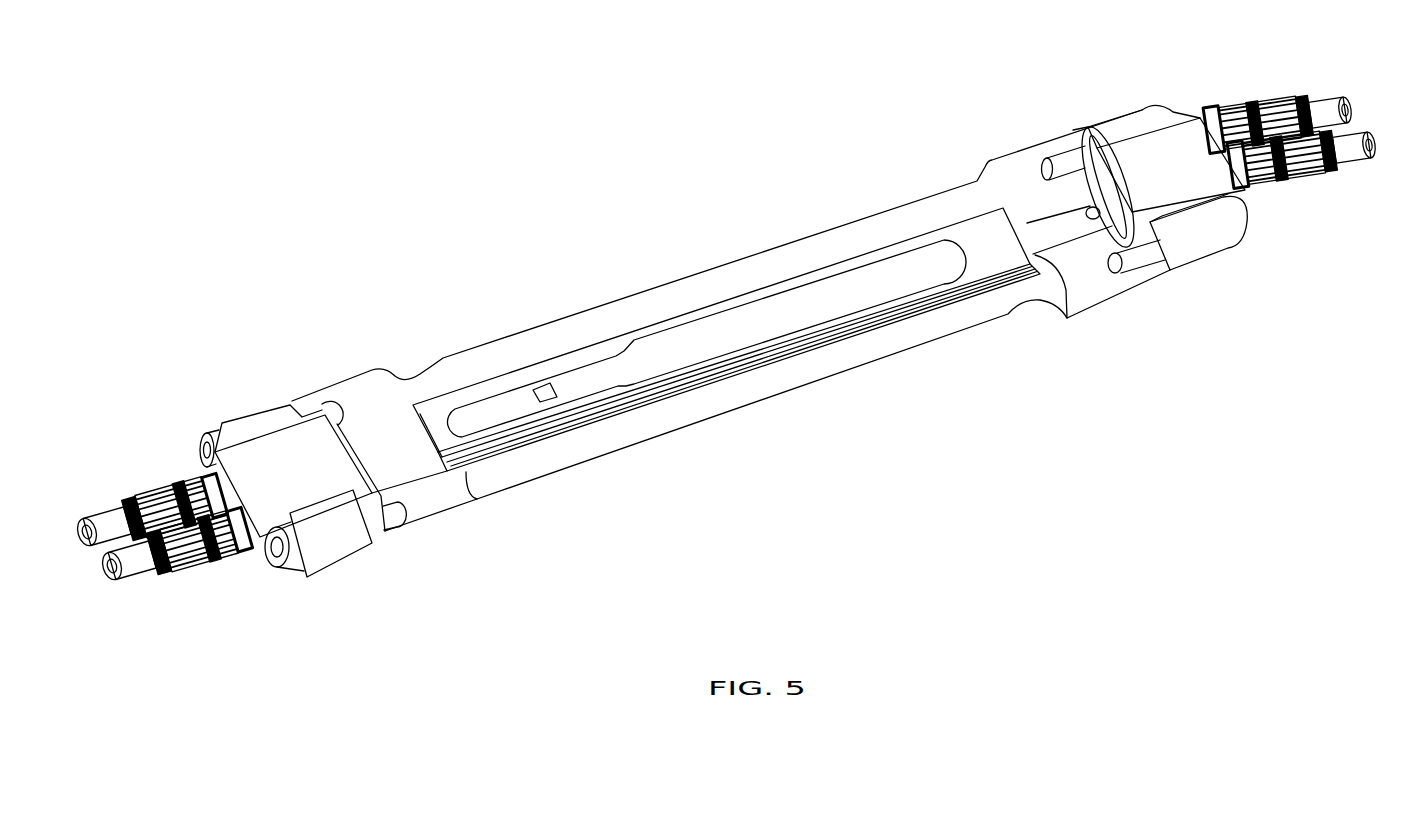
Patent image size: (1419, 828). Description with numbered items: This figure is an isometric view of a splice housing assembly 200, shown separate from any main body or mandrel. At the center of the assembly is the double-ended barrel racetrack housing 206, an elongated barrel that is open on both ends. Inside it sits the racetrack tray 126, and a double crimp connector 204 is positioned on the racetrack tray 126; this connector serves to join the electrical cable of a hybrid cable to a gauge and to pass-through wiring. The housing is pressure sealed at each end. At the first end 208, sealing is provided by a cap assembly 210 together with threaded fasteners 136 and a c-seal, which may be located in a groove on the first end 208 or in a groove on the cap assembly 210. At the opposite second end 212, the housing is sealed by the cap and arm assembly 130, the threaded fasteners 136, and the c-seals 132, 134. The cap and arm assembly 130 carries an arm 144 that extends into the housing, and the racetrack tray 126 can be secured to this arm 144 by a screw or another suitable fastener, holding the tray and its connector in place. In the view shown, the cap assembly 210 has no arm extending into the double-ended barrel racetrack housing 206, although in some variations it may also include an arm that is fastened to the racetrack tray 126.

The splice housing assembly 200 is at (725, 322).
The racetrack tray 126 is at (622, 347).
The cap and arm assembly 130 is at (1100, 137).
The c-seal 132 is at (1112, 192).
The c-seal 134 is at (1173, 115).
The threaded fasteners 136 is at (331, 412).
The arm 144 is at (1105, 208).
The double crimp connector 204 is at (547, 392).
The double-ended barrel racetrack housing 206 is at (450, 377).
The first end 208 is at (328, 384).
The cap assembly 210 is at (345, 530).
The second end 212 is at (1073, 131).